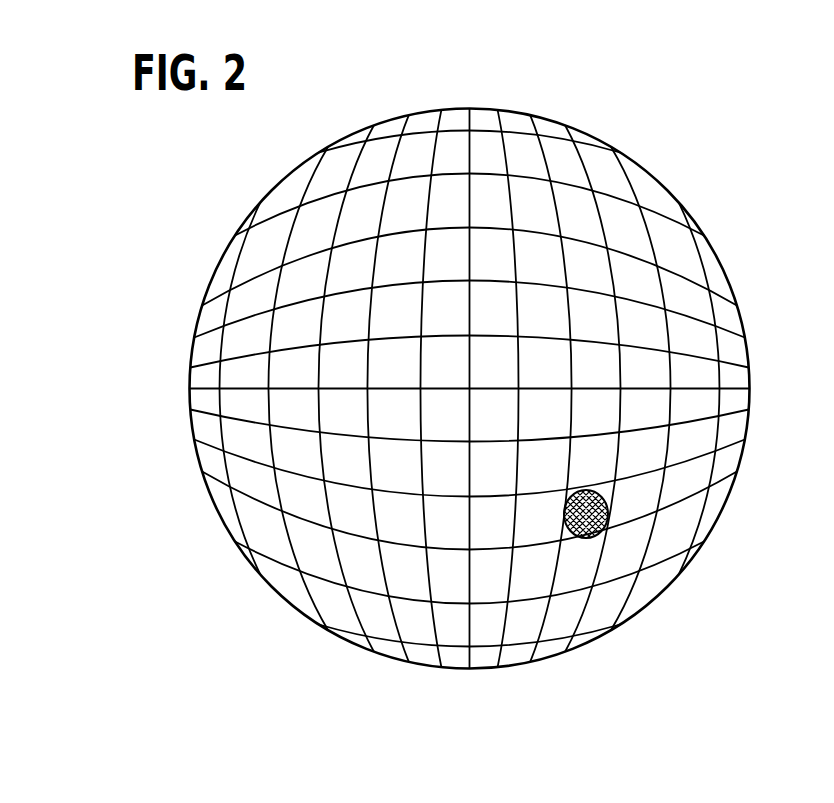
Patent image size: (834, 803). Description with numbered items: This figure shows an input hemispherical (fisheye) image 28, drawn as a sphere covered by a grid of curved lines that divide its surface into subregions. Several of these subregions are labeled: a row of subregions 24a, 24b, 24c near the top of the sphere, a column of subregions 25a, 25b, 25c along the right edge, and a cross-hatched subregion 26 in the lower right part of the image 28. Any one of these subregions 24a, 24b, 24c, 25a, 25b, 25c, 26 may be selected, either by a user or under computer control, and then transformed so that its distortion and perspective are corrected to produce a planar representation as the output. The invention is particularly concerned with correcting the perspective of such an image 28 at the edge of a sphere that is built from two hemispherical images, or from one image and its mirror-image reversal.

The subregion 24a is at (432, 193).
The subregion 24b is at (510, 204).
The subregion 24c is at (648, 235).
The subregion 25a is at (695, 318).
The subregion 25b is at (683, 430).
The subregion 25c is at (677, 510).
The subregion 26 is at (566, 521).
The image 28 is at (363, 128).